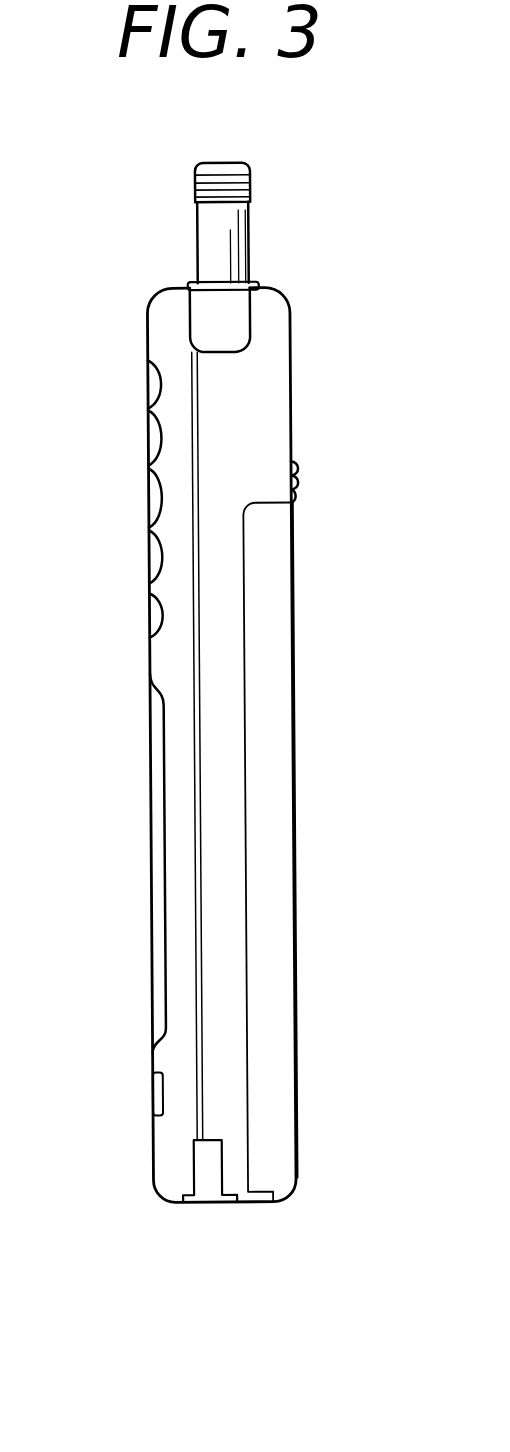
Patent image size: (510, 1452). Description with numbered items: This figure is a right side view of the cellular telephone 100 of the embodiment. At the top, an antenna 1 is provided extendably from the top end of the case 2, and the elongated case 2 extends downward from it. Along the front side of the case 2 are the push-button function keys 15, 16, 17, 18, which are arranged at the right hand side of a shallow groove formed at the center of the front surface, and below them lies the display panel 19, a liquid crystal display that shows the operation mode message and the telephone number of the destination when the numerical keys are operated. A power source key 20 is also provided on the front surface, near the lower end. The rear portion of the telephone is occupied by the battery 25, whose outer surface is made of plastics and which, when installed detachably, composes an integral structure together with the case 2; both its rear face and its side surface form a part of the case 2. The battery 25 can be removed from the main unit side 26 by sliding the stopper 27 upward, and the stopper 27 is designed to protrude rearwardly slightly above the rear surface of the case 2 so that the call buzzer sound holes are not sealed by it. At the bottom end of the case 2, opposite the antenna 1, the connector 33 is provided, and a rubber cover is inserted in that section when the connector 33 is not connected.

The antenna 1 is at (231, 230).
The case 2 is at (151, 378).
The function key 15 is at (151, 435).
The function key 16 is at (151, 497).
The function key 17 is at (151, 556).
The function key 18 is at (151, 613).
The display panel 19 is at (151, 855).
The power source key 20 is at (150, 1091).
The battery 25 is at (281, 864).
The main unit side 26 is at (277, 398).
The stopper 27 is at (300, 480).
The connector 33 is at (218, 1204).
The cellular telephone 100 is at (237, 745).